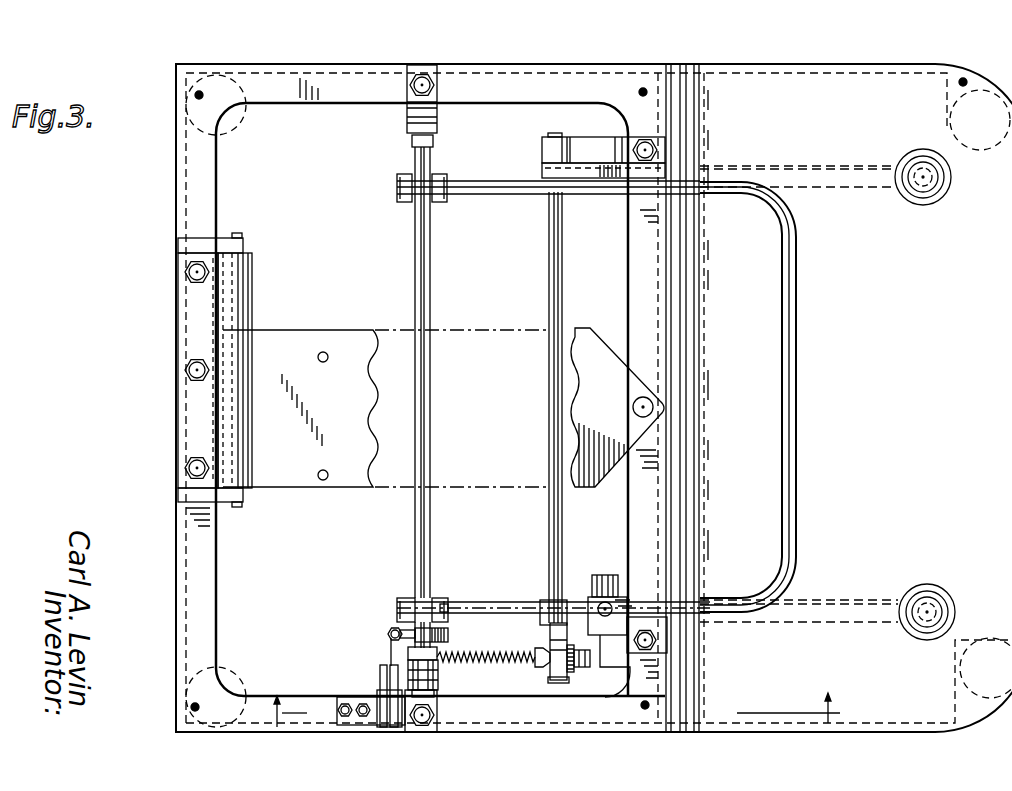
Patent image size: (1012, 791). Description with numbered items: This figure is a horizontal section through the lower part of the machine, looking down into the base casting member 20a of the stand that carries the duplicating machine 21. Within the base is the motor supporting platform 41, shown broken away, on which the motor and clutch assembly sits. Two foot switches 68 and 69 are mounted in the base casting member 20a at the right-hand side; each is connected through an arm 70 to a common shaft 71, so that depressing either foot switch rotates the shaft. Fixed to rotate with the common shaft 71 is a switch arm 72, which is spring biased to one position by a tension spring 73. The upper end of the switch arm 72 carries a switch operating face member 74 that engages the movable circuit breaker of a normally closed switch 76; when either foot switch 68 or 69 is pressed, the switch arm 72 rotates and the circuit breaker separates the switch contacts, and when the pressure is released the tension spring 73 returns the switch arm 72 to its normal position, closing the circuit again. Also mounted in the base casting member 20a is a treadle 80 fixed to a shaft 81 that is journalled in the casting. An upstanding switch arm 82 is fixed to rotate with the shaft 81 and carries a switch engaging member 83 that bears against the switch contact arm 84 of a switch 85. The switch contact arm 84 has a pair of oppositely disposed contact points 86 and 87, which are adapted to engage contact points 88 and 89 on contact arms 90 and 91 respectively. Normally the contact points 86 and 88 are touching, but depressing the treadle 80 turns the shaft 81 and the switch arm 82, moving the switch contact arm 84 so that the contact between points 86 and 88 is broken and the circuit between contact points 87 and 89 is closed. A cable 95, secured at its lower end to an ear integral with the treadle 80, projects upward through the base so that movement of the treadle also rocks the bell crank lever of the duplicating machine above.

The base casting member 20a is at (727, 82).
The duplicating machine 21 is at (185, 558).
The motor supporting platform 41 is at (330, 334).
The foot switch 68 is at (933, 602).
The foot switch 69 is at (932, 200).
The arm 70 is at (788, 146).
The common shaft 71 is at (548, 527).
The switch arm 72 is at (550, 677).
The tension spring 73 is at (483, 655).
The switch operating face member 74 is at (573, 672).
The normally closed switch 76 is at (582, 668).
The treadle 80 is at (797, 373).
The shaft 81 is at (432, 517).
The upstanding switch arm 82 is at (397, 625).
The switch engaging member 83 is at (450, 608).
The switch contact arm 84 is at (392, 631).
The switch 85 is at (384, 730).
The contact point 86 is at (390, 660).
The contact point 87 is at (390, 634).
The contact point 88 is at (383, 670).
The contact point 89 is at (440, 675).
The contact arm 90 is at (382, 678).
The contact arm 91 is at (432, 690).
The cable 95 is at (600, 603).